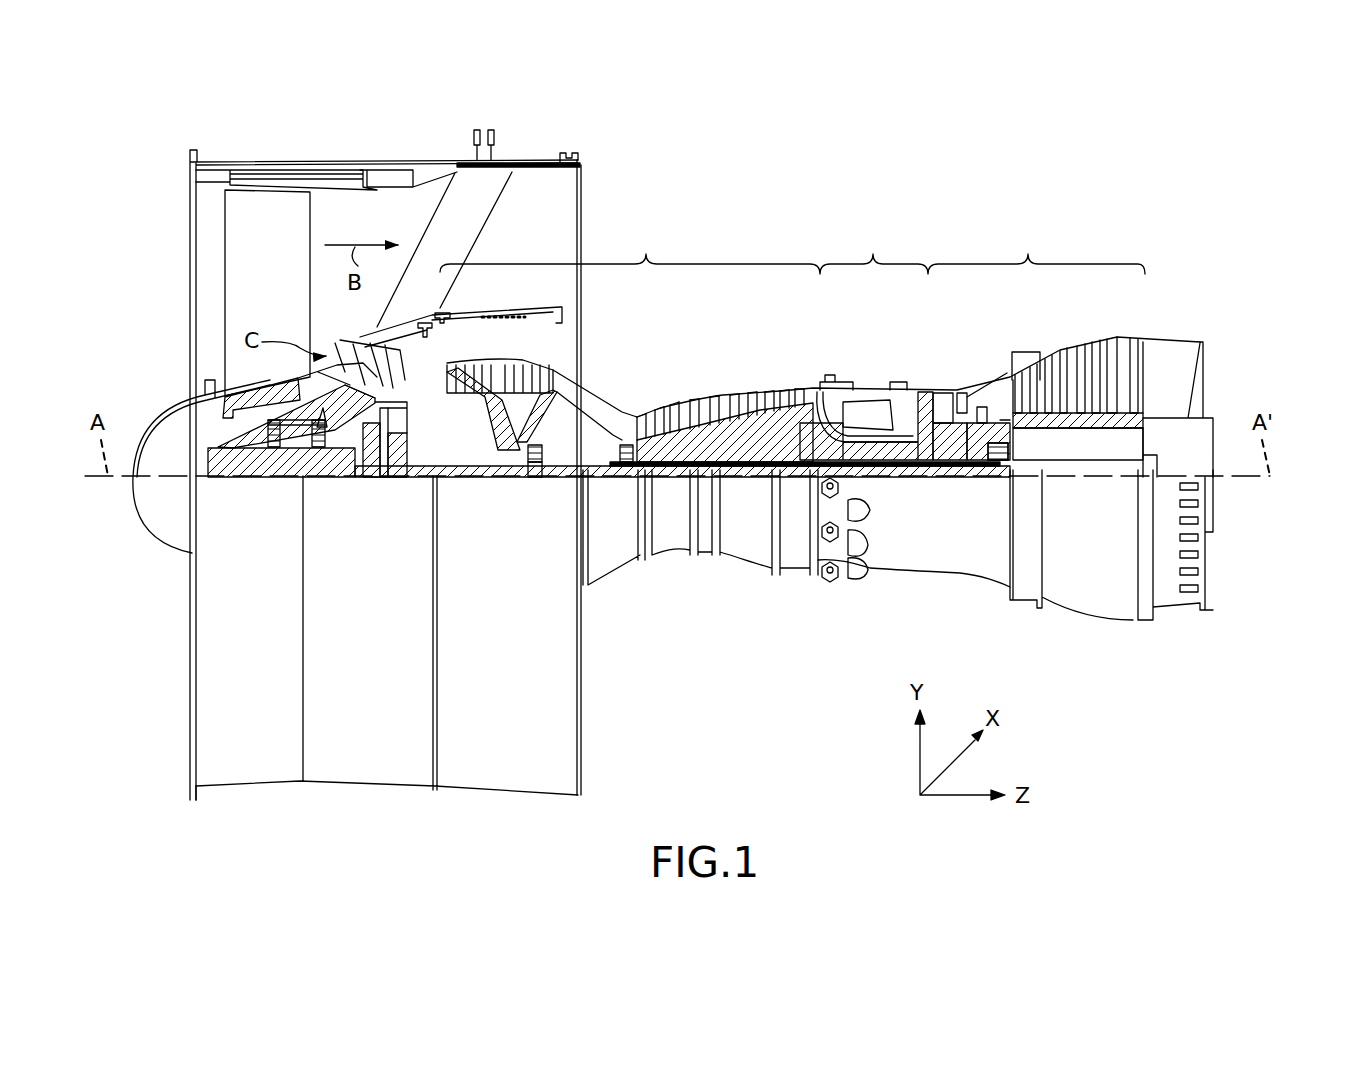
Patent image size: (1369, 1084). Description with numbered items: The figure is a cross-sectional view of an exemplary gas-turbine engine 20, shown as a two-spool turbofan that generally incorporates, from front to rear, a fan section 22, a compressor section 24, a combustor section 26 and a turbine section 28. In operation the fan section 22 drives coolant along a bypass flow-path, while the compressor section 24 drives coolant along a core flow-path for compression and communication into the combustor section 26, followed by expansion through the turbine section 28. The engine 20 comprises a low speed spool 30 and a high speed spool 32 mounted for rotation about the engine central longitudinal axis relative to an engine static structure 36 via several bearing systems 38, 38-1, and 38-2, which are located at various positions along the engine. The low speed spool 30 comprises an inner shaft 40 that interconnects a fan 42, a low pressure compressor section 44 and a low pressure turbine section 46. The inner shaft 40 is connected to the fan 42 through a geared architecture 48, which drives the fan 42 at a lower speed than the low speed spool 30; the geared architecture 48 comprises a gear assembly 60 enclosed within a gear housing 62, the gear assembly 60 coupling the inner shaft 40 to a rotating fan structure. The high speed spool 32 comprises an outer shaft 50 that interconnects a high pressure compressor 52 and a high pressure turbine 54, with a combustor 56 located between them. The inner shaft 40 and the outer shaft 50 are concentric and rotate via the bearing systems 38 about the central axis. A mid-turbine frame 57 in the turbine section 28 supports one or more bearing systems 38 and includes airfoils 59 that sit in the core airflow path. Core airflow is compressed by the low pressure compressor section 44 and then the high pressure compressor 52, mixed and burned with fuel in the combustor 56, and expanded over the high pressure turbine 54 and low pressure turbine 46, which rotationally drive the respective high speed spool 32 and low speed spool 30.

The gas-turbine engine 20 is at (923, 192).
The fan section 22 is at (430, 135).
The compressor section 24 is at (792, 252).
The combustor section 26 is at (874, 242).
The turbine section 28 is at (1111, 425).
The low speed spool 30 is at (752, 490).
The high speed spool 32 is at (795, 445).
The engine static structure 36 is at (365, 765).
The bearing system 38 is at (985, 476).
The bearing system 38-1 is at (278, 452).
The bearing system 38-2 is at (533, 465).
The inner shaft 40 is at (602, 480).
The fan 42 is at (267, 293).
The low pressure compressor section 44 is at (510, 373).
The low pressure turbine section 46 is at (1078, 358).
The geared architecture 48 is at (398, 488).
The outer shaft 50 is at (875, 466).
The high pressure compressor 52 is at (732, 445).
The high pressure turbine 54 is at (940, 393).
The combustor 56 is at (866, 413).
The mid-turbine frame 57 is at (982, 395).
The airfoils 59 is at (1003, 398).
The gear assembly 60 is at (408, 457).
The gear housing 62 is at (405, 427).